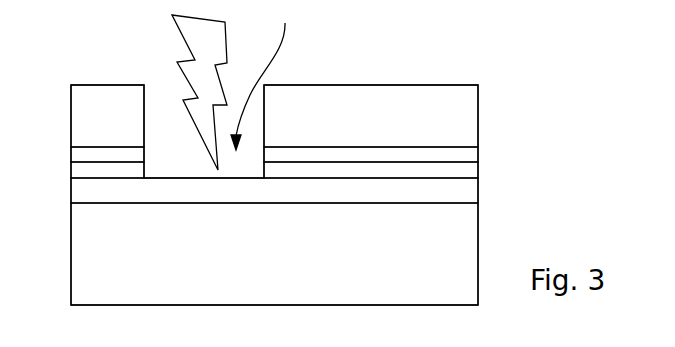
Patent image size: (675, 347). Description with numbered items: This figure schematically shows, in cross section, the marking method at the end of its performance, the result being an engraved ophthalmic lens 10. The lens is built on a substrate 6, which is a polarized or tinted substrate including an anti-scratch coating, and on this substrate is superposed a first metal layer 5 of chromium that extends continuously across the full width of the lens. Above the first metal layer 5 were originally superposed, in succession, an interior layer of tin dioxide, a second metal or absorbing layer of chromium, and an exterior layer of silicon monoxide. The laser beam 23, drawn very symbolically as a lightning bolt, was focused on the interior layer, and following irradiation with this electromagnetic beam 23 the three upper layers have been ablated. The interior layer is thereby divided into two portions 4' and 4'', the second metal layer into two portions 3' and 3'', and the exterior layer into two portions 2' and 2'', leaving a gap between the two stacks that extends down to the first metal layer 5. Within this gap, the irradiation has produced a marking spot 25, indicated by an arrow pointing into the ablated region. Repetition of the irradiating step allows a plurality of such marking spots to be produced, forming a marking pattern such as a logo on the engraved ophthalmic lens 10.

The engraved ophthalmic lens 10 is at (479, 85).
The substrate 6 is at (78, 263).
The first metal layer 5 is at (78, 198).
The first portion of the interior layer 4' is at (87, 171).
The second portion of the interior layer 4'' is at (396, 177).
The first portion of the second metal layer 3' is at (87, 148).
The second portion of the second metal layer 3'' is at (396, 149).
The first portion of the exterior layer 2' is at (87, 116).
The second portion of the exterior layer 2'' is at (371, 92).
The laser beam 23 is at (186, 33).
The marking spot 25 is at (258, 77).